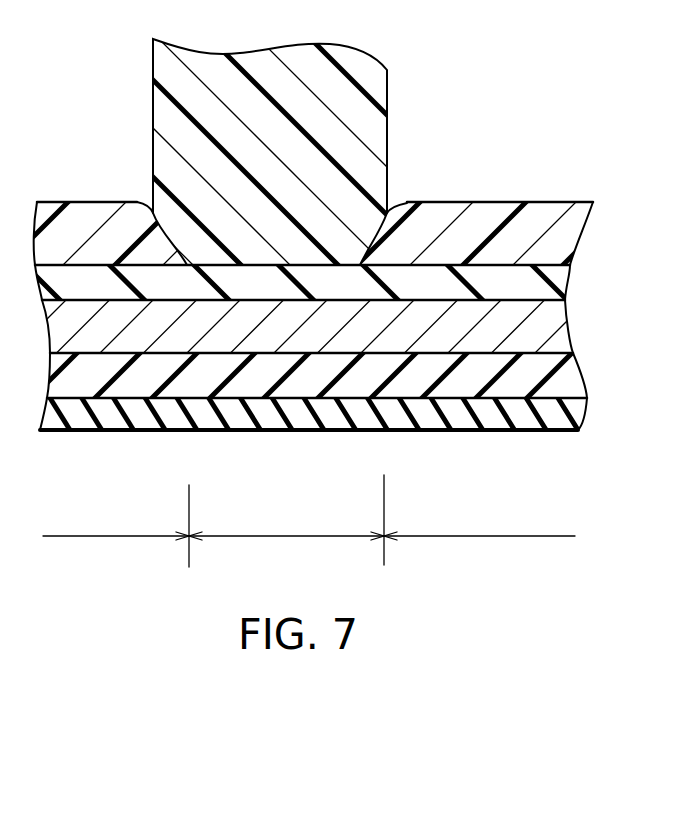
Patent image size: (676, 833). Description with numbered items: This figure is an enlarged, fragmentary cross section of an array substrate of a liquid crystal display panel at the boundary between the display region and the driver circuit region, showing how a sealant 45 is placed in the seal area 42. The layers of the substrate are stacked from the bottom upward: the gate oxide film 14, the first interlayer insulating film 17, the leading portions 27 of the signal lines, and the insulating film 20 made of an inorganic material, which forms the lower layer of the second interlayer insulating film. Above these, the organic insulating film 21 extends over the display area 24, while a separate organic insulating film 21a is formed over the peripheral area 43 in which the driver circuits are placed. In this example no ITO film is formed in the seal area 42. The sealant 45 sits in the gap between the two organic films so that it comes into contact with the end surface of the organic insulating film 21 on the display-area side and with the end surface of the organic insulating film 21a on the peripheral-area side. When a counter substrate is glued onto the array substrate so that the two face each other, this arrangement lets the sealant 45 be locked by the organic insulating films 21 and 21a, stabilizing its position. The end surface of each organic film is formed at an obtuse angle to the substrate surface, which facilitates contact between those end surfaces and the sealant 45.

The sealant 45 is at (365, 110).
The organic insulating film 21 is at (65, 227).
The organic insulating film 21a is at (502, 218).
The insulating film made of an inorganic material 20 is at (428, 284).
The leading portions of the signal lines 27 is at (359, 344).
The first interlayer insulating film 17 is at (305, 384).
The gate oxide film 14 is at (233, 422).
The display area 24 is at (116, 553).
The seal area 42 is at (286, 553).
The peripheral area 43 is at (479, 553).